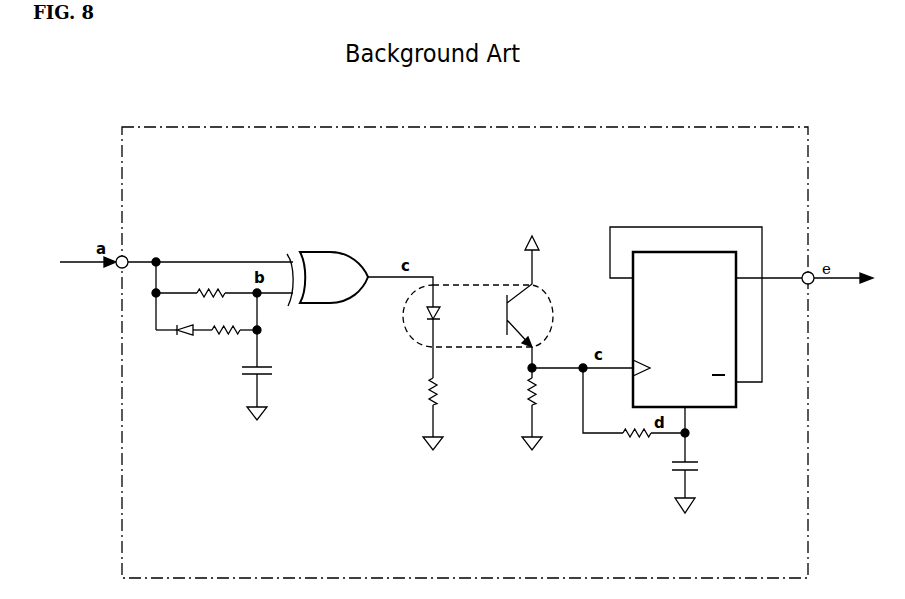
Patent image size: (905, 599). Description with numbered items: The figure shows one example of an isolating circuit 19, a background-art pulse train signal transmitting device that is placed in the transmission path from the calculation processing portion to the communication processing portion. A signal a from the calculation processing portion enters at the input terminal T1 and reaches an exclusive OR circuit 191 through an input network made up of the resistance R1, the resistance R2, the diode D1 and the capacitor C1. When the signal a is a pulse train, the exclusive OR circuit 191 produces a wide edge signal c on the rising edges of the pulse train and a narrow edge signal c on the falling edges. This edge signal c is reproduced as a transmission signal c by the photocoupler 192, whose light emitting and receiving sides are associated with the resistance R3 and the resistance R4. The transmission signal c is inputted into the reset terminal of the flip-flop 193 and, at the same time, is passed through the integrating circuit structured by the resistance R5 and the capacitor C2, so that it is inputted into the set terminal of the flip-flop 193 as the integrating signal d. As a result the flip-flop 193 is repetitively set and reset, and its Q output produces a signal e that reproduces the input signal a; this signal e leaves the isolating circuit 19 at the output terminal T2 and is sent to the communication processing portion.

The isolating circuit 19 is at (688, 127).
The exclusive OR circuit 191 is at (333, 251).
The photocoupler 192 is at (487, 347).
The flip-flop 193 is at (737, 402).
The input terminal T1 is at (117, 268).
The output terminal T2 is at (813, 284).
The resistance R1 is at (224, 284).
The resistance R2 is at (234, 345).
The resistance R3 is at (417, 414).
The resistance R4 is at (542, 407).
The resistance R5 is at (634, 417).
The capacitor C1 is at (272, 375).
The capacitor C2 is at (701, 473).
The diode D1 is at (184, 346).